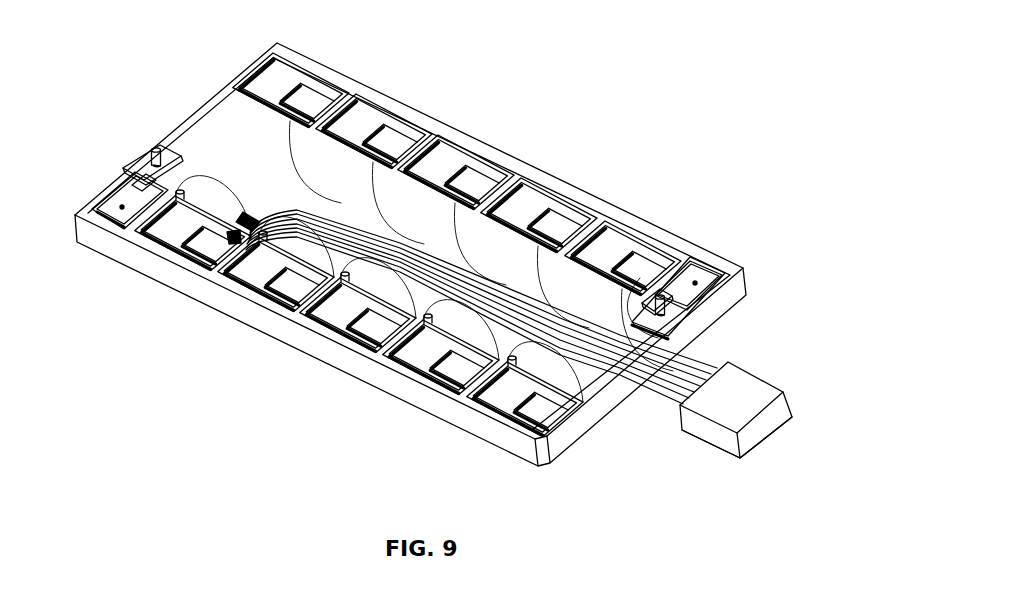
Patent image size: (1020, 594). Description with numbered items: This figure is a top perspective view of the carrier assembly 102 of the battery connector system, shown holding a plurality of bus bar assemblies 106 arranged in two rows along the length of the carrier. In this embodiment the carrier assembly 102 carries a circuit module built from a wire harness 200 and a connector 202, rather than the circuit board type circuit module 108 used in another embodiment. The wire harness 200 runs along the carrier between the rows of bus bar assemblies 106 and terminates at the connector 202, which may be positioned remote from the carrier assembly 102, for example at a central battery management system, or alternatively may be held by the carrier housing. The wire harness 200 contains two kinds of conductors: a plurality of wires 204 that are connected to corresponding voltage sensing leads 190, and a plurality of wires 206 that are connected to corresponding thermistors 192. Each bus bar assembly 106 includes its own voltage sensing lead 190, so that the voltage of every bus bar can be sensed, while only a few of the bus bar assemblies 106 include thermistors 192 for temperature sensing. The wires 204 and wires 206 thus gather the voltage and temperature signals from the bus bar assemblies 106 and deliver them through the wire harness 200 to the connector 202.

The carrier assembly 102 is at (533, 107).
The bus bar assembly 106 is at (302, 80).
The circuit module 108 is at (752, 458).
The voltage sensing lead 190 is at (123, 231).
The thermistor 192 is at (233, 239).
The wire harness 200 is at (720, 345).
The connector 202 is at (753, 393).
The wire 204 is at (213, 177).
The wire 206 is at (277, 207).